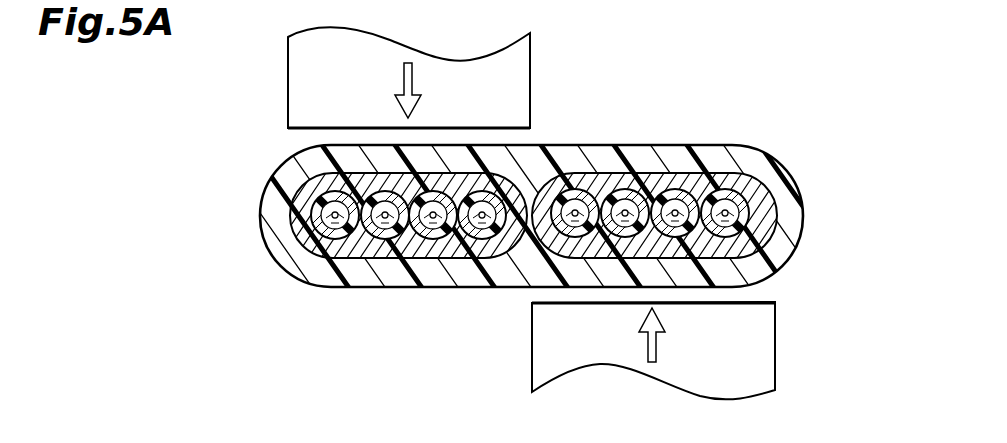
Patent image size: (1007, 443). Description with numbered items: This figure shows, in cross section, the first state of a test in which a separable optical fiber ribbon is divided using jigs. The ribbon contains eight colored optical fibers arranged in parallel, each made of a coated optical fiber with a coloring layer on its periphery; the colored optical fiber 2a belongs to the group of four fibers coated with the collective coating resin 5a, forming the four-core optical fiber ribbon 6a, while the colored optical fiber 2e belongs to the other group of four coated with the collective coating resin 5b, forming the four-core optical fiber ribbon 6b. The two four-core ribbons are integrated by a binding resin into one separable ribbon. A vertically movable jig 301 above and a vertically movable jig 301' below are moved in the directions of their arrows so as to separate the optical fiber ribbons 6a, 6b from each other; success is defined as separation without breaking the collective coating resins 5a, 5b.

The vertically movable jig 301 is at (370, 77).
The vertically movable jig 301' is at (694, 350).
The colored optical fiber 2a is at (470, 257).
The colored optical fiber 2e is at (590, 175).
The collective coating resin 5a is at (350, 245).
The collective coating resin 5b is at (722, 174).
The four-core optical fiber ribbon 6a is at (408, 255).
The four-core optical fiber ribbon 6b is at (650, 174).